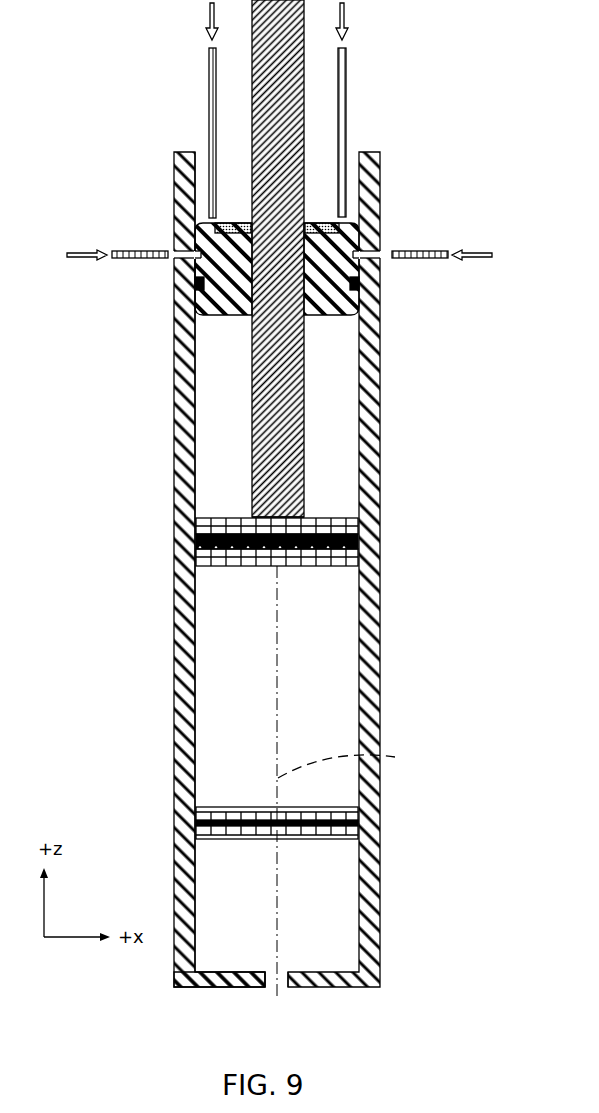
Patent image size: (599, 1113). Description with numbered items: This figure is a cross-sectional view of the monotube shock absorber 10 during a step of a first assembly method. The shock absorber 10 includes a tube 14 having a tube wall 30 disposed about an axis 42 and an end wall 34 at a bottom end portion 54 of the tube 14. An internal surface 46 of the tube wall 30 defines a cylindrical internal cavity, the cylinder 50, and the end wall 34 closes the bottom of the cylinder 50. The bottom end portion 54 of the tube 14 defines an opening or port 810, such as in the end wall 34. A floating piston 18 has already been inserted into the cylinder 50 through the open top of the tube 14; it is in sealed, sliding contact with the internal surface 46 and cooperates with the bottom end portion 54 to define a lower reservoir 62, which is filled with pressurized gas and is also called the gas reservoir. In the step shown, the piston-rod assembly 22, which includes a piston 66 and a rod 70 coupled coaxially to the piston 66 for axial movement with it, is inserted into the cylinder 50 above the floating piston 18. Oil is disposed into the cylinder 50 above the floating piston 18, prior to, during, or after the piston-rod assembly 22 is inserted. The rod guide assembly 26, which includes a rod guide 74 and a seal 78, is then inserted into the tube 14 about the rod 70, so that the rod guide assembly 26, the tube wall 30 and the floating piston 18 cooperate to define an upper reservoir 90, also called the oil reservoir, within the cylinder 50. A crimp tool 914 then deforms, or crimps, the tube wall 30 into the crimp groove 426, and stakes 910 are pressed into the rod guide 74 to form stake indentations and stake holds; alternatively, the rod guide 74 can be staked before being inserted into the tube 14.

The shock absorber 10 is at (58, 146).
The tube 14 is at (165, 598).
The floating piston 18 is at (206, 825).
The piston-rod assembly 22 is at (238, 509).
The rod guide assembly 26 is at (212, 322).
The tube wall 30 is at (180, 694).
The end wall 34 is at (236, 988).
The axis 42 is at (402, 765).
The internal surface 46 is at (195, 444).
The cylinder 50 is at (220, 660).
The bottom end portion 54 is at (414, 958).
The lower reservoir 62 is at (250, 918).
The piston 66 is at (333, 565).
The rod 70 is at (305, 471).
The rod guide 74 is at (332, 300).
The seal 78 is at (318, 210).
The upper reservoir 90 is at (337, 642).
The crimp groove 426 is at (333, 255).
The port 810 is at (290, 988).
The stakes 910 is at (208, 105).
The crimp tool 914 is at (133, 250).